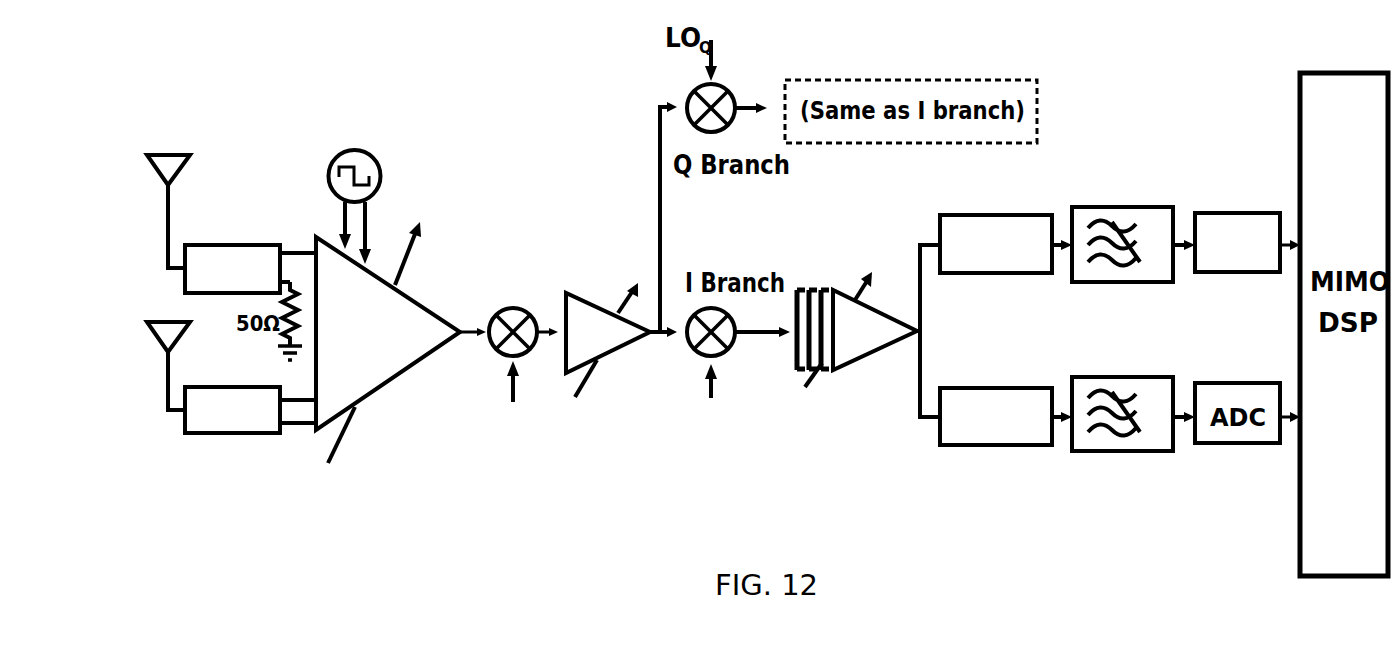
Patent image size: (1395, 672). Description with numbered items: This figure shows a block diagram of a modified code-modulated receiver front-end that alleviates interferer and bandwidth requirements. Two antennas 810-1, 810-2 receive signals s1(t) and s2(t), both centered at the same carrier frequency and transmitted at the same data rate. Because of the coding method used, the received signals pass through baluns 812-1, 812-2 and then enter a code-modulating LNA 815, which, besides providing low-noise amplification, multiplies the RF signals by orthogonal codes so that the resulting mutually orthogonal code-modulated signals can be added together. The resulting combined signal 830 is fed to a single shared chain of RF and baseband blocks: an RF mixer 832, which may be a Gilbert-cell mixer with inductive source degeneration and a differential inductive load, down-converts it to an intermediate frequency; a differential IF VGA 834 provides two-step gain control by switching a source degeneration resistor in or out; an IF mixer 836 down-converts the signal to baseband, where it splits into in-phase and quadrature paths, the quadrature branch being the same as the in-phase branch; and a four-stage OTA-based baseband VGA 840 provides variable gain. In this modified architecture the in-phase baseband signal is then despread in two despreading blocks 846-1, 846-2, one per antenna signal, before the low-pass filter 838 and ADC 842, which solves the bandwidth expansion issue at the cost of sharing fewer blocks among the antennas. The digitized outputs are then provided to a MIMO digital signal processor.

The antenna 810-1 is at (165, 240).
The antenna 810-2 is at (165, 383).
The balun 812-1 is at (192, 243).
The balun 812-2 is at (192, 387).
The code-modulating LNA (CM-LNA) 815 is at (412, 370).
The combined signal 830 is at (470, 322).
The RF mixer 832 is at (500, 308).
The differential IF VGA 834 is at (617, 352).
The IF mixer 836 is at (720, 355).
The baseband VGA 840 is at (810, 288).
The despreading block 846-1 is at (962, 215).
The despreading block 846-2 is at (962, 388).
The LPF 838 is at (1098, 207).
The ADC 842 is at (1217, 213).